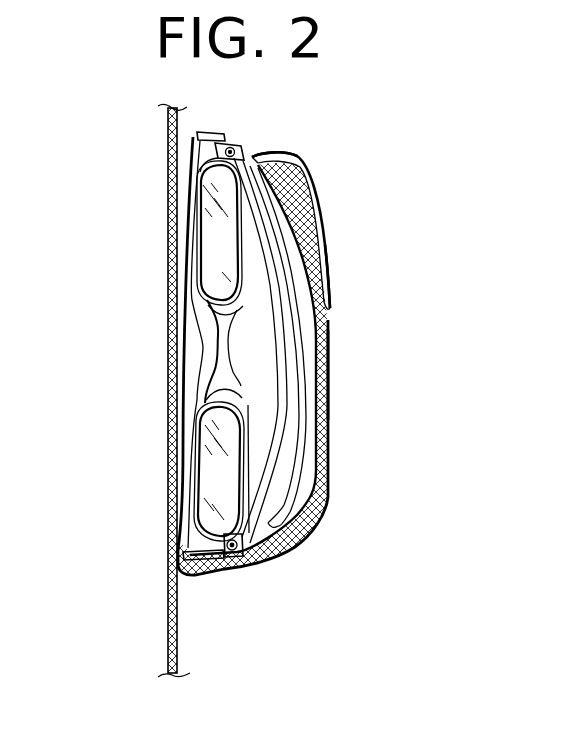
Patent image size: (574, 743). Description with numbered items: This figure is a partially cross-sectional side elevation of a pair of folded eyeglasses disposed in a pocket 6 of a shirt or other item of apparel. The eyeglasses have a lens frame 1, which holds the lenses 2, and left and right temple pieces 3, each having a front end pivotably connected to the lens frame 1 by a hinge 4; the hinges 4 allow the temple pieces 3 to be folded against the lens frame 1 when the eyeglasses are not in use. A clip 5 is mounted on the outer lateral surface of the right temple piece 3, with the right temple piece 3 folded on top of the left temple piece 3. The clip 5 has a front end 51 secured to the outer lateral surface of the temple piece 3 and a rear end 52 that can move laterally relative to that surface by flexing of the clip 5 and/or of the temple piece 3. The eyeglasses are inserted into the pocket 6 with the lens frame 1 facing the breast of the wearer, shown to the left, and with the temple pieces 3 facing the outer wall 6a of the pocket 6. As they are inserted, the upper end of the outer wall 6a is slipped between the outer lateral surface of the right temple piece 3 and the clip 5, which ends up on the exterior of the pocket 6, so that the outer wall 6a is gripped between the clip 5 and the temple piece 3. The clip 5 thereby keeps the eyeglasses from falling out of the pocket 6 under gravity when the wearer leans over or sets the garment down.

The lens frame 1 is at (198, 350).
The lens 2 is at (205, 237).
The temple piece 3 is at (302, 428).
The hinge 4 is at (233, 150).
The clip 5 is at (326, 234).
The front end of clip 51 is at (266, 158).
The rear end of clip 52 is at (328, 302).
The pocket 6 is at (280, 537).
The outer wall of pocket 6a is at (328, 373).